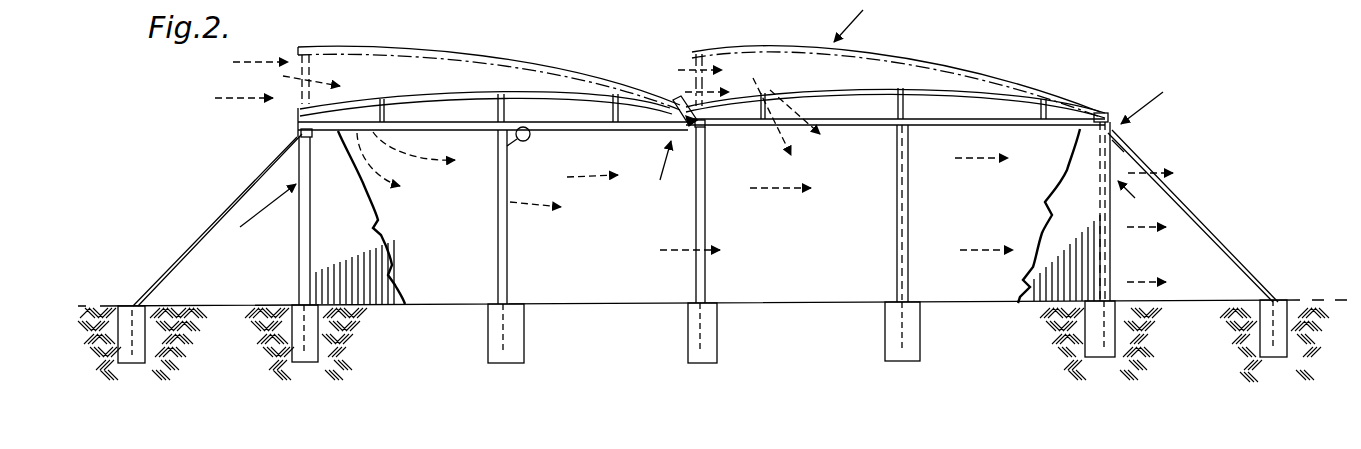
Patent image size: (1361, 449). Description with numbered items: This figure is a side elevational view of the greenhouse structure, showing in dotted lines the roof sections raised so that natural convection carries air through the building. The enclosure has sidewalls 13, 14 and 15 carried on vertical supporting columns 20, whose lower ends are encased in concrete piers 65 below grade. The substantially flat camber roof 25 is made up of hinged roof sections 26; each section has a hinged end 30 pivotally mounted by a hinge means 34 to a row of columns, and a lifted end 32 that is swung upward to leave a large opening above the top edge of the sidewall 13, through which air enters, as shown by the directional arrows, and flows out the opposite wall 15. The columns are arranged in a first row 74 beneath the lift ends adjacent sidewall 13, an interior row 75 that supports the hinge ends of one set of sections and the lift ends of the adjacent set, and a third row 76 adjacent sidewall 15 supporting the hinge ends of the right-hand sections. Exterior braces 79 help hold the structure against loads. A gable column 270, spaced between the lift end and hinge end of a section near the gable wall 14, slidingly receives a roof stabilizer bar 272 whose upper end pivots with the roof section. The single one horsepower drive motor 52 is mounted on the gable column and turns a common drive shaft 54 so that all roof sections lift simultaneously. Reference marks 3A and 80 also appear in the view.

The sidewall 13 is at (300, 283).
The sidewall 14 is at (1050, 305).
The sidewall 15 is at (1117, 148).
The vertical supporting column 20 is at (298, 259).
The roof 25 is at (843, 21).
The roof section 26 is at (423, 23).
The hinged end 30 is at (673, 103).
The lifted end 32 is at (333, 12).
The hinge means 34 is at (655, 165).
The section indicator 3A is at (1143, 102).
The drive motor 52 is at (533, 138).
The drive shaft 54 is at (362, 217).
The pier 65 is at (490, 330).
The first row of columns 74 is at (266, 212).
The interior row of columns 75 is at (694, 222).
The third row of columns 76 is at (1132, 200).
The exterior brace 79 is at (212, 222).
The inner roof 80 is at (423, 80).
The gable column 270 is at (510, 243).
The roof stabilizer bar 272 is at (500, 143).